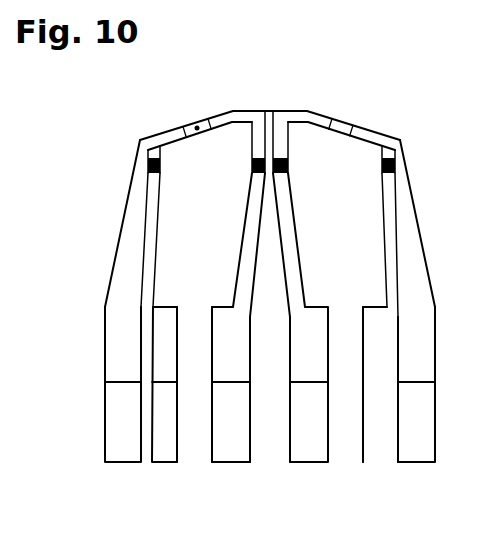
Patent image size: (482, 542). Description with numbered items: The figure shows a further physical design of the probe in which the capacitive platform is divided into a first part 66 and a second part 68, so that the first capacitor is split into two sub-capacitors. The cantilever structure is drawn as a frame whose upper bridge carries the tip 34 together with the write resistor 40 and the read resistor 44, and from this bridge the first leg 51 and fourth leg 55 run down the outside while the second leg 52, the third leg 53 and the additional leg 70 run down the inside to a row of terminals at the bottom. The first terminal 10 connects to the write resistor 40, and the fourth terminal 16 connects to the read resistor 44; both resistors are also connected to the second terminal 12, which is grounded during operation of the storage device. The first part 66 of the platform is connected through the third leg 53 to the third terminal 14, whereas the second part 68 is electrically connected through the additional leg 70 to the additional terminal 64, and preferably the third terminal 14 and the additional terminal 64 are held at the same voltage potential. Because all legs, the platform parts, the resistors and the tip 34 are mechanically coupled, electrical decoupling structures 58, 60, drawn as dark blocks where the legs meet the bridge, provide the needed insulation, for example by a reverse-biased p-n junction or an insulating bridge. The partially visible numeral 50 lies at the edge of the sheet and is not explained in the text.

The first terminal 10 is at (123, 462).
The second terminal 12 is at (270, 462).
The third terminal 14 is at (187, 462).
The fourth terminal 16 is at (418, 452).
The tip 34 is at (192, 127).
The write resistor 40 is at (199, 124).
The read resistor 44 is at (342, 127).
The frame 50 is at (476, 367).
The first leg 51 is at (127, 255).
The second leg 52 is at (247, 343).
The third leg 53 is at (183, 340).
The fourth leg 55 is at (418, 257).
The electrical decoupling structure 58 is at (150, 163).
The electrical decoupling structure 60 is at (281, 158).
The additional terminal 64 is at (347, 452).
The first part 66 is at (177, 208).
The second part 68 is at (368, 204).
The additional leg 70 is at (358, 342).